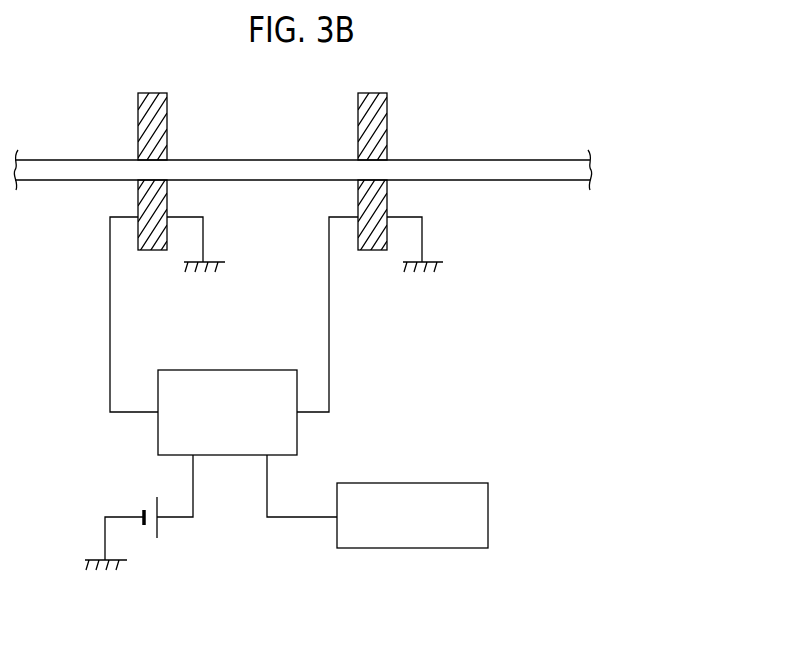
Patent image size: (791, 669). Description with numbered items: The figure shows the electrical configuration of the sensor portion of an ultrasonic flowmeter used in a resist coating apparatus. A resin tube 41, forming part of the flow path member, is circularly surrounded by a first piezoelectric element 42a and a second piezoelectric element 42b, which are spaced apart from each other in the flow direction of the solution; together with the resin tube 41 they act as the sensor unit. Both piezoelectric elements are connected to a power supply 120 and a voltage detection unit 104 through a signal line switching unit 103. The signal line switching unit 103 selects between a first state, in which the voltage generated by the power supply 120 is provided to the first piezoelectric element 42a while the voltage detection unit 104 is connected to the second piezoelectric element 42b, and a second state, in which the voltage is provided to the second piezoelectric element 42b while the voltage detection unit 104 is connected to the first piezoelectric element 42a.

The resin tube 41 is at (513, 160).
The first piezoelectric element 42a is at (167, 110).
The second piezoelectric element 42b is at (387, 110).
The signal line switching unit 103 is at (237, 367).
The voltage detection unit 104 is at (412, 480).
The power supply 120 is at (152, 505).